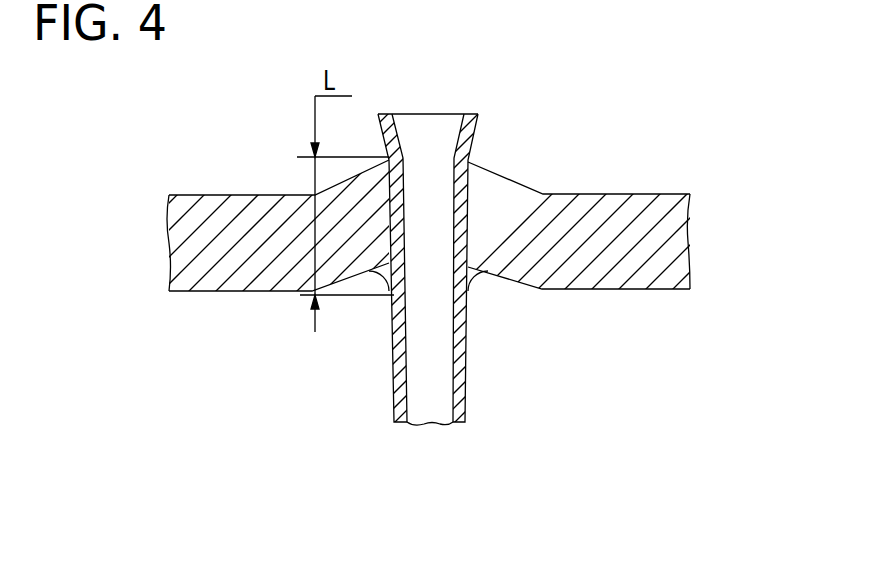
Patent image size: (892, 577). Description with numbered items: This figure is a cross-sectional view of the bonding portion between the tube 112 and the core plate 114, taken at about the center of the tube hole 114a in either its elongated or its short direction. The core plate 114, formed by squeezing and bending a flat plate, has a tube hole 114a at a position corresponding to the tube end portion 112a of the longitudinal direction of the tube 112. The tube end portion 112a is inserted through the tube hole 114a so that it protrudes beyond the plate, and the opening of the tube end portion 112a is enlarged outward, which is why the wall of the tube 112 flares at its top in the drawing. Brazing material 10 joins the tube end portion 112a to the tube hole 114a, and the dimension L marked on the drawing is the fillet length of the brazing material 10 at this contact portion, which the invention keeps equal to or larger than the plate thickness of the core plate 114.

The brazing material 10 is at (402, 195).
The tube 112 is at (466, 363).
The tube end portion 112a is at (448, 114).
The core plate 114 is at (210, 291).
The tube hole 114a is at (393, 240).